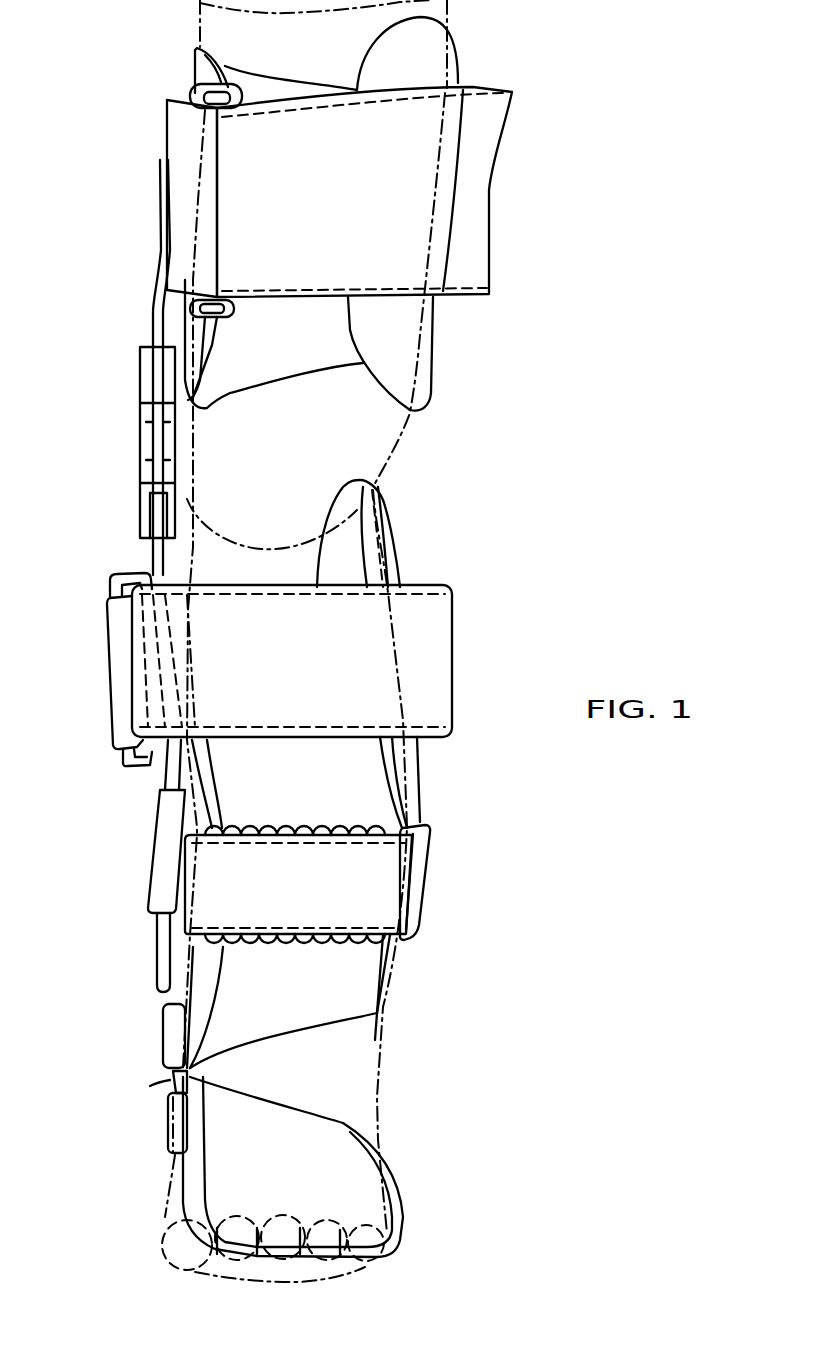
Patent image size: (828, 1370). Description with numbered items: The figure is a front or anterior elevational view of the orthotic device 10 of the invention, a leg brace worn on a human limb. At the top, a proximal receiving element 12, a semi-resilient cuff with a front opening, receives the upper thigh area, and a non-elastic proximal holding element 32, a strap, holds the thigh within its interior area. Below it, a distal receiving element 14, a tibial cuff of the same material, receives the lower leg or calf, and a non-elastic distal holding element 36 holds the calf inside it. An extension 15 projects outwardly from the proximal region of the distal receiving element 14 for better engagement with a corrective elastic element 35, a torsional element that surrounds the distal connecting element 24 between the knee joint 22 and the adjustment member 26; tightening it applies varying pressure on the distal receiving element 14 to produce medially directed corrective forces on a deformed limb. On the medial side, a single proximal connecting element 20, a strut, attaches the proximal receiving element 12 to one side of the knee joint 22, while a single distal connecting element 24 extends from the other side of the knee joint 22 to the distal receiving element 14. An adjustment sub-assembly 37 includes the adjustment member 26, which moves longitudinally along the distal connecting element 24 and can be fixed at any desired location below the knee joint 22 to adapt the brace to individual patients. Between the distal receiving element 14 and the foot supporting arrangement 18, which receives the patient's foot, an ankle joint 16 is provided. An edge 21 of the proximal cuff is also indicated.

The orthotic device 10 is at (531, 576).
The proximal receiving element 12 is at (421, 340).
The distal receiving element 14 is at (414, 792).
The extension 15 is at (387, 537).
The ankle joint 16 is at (167, 1081).
The foot supporting arrangement 18 is at (405, 1204).
The proximal connecting element 20 is at (153, 308).
The shell edge 21 is at (421, 390).
The knee joint 22 is at (143, 447).
The distal connecting element 24 is at (166, 774).
The adjustment member 26 is at (153, 895).
The proximal holding element 32 is at (480, 200).
The corrective elastic element 35 is at (448, 678).
The distal holding element 36 is at (370, 917).
The adjustment sub-assembly 37 is at (131, 856).